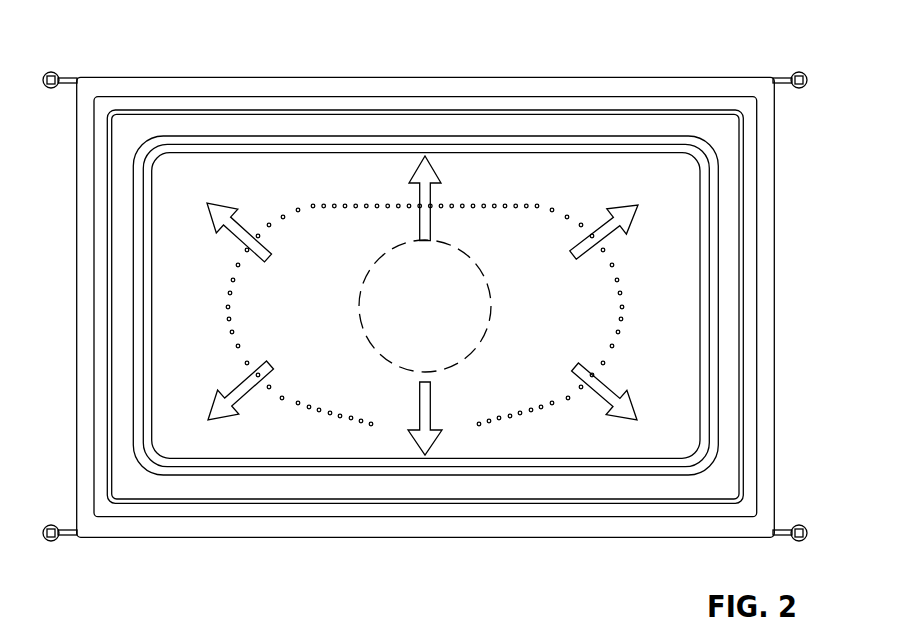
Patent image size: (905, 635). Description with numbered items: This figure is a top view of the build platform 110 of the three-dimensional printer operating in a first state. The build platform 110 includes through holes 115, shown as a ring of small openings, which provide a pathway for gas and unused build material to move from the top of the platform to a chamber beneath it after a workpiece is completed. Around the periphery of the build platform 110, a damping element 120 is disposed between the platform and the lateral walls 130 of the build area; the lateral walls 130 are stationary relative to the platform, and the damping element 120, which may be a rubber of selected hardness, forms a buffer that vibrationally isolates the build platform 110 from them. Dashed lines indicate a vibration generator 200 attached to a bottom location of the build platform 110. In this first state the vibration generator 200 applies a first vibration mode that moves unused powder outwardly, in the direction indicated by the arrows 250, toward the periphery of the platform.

The build platform 110 is at (170, 175).
The through holes 115 is at (504, 204).
The damping element 120 is at (290, 143).
The lateral walls 130 is at (482, 105).
The vibration generator 200 is at (370, 341).
The arrows 250 is at (223, 410).